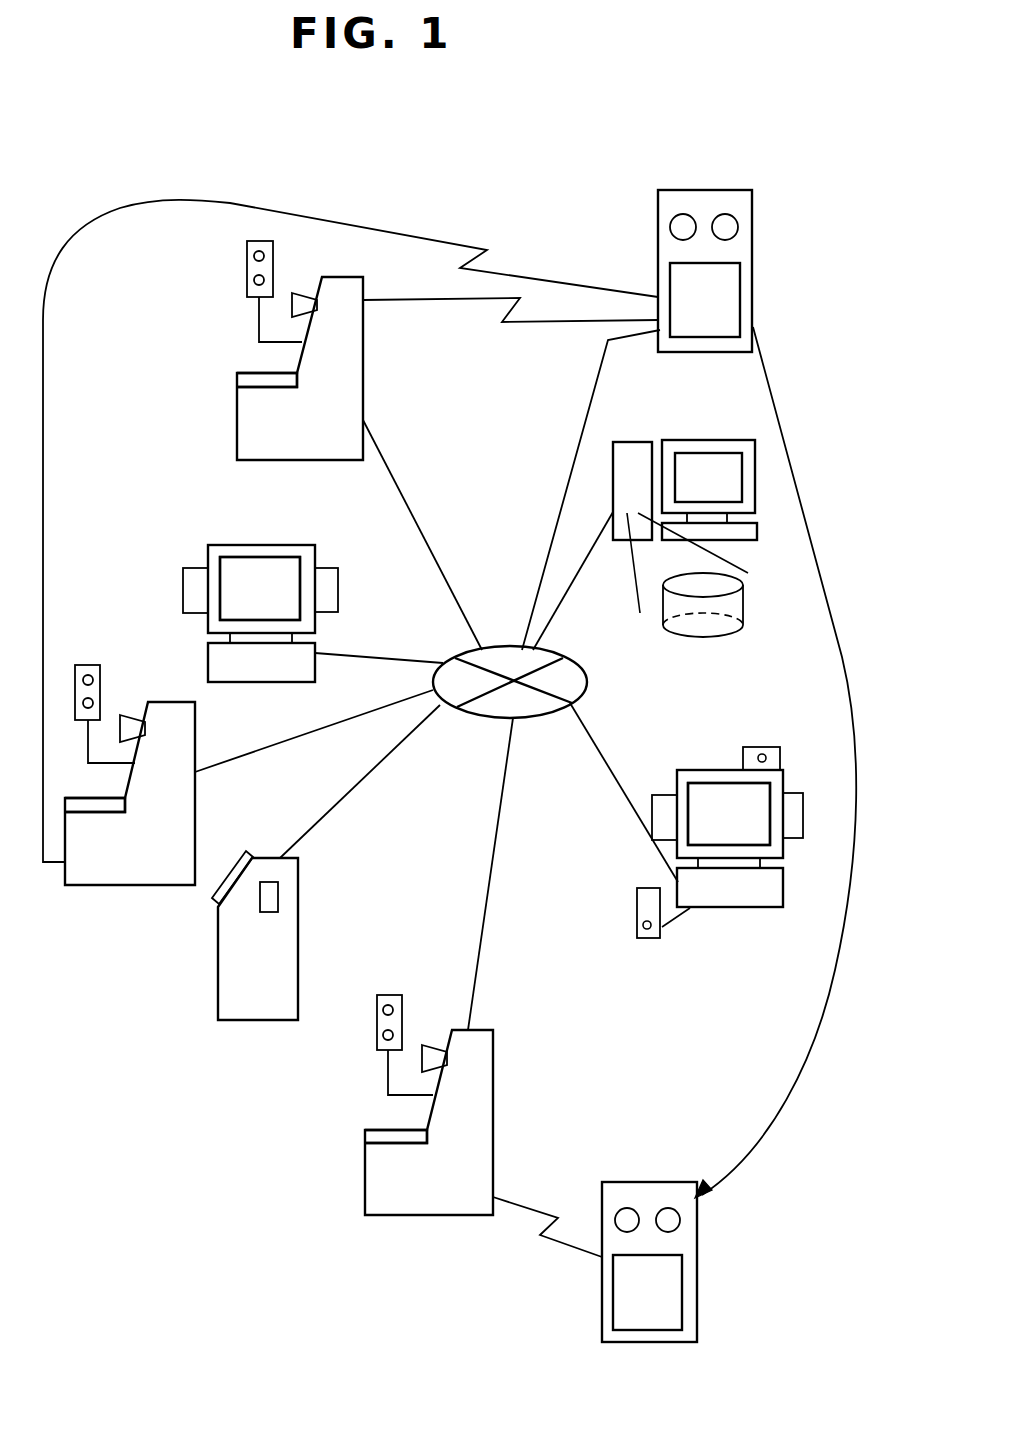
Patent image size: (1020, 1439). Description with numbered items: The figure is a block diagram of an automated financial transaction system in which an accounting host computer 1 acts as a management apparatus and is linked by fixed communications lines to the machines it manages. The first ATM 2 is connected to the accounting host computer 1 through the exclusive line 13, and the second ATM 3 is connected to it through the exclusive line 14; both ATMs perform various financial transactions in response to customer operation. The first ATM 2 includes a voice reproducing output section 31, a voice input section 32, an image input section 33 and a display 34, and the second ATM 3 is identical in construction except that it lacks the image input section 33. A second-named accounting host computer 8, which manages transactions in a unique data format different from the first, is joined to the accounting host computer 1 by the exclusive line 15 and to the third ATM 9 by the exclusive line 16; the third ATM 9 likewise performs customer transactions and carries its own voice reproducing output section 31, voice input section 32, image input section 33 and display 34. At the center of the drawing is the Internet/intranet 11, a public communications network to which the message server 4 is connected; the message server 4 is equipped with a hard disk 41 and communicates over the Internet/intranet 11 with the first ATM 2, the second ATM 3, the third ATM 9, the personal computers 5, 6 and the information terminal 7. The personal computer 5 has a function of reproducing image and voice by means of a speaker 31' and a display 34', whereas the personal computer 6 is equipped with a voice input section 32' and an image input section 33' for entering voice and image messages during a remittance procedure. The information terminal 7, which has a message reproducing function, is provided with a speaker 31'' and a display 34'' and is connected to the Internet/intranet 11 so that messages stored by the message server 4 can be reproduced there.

The accounting host computer 1 is at (753, 235).
The first automated teller machine 2 is at (365, 378).
The second automated teller machine 3 is at (125, 877).
The message server 4 is at (685, 430).
The personal computer 5 is at (240, 682).
The personal computer 6 is at (747, 910).
The information terminal 7 is at (240, 1025).
The second accounting host computer 8 is at (697, 1300).
The third automated teller machine 9 is at (432, 1217).
The Internet/intranet 11 is at (480, 718).
The exclusive line 13 is at (530, 323).
The exclusive line 14 is at (560, 280).
The exclusive line 15 is at (775, 393).
The exclusive line 16 is at (535, 1210).
The voice reproducing output section 31 is at (238, 644).
The voice input section 32 is at (258, 685).
The image input section 33 is at (286, 652).
The display 34 is at (240, 767).
The hard disk 41 is at (743, 605).
The speaker 31' is at (472, 682).
The voice input section 32' is at (607, 918).
The image input section 33' is at (770, 729).
The display 34' is at (495, 670).
The speaker 31'' is at (326, 887).
The display 34'' is at (243, 850).